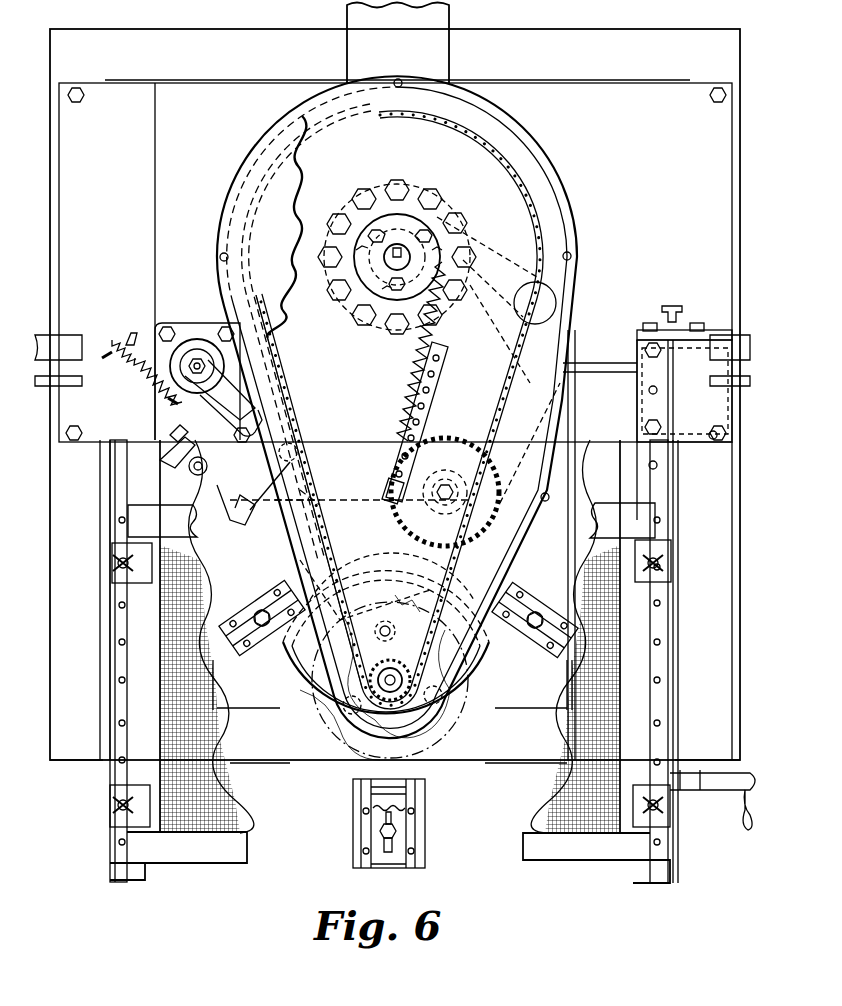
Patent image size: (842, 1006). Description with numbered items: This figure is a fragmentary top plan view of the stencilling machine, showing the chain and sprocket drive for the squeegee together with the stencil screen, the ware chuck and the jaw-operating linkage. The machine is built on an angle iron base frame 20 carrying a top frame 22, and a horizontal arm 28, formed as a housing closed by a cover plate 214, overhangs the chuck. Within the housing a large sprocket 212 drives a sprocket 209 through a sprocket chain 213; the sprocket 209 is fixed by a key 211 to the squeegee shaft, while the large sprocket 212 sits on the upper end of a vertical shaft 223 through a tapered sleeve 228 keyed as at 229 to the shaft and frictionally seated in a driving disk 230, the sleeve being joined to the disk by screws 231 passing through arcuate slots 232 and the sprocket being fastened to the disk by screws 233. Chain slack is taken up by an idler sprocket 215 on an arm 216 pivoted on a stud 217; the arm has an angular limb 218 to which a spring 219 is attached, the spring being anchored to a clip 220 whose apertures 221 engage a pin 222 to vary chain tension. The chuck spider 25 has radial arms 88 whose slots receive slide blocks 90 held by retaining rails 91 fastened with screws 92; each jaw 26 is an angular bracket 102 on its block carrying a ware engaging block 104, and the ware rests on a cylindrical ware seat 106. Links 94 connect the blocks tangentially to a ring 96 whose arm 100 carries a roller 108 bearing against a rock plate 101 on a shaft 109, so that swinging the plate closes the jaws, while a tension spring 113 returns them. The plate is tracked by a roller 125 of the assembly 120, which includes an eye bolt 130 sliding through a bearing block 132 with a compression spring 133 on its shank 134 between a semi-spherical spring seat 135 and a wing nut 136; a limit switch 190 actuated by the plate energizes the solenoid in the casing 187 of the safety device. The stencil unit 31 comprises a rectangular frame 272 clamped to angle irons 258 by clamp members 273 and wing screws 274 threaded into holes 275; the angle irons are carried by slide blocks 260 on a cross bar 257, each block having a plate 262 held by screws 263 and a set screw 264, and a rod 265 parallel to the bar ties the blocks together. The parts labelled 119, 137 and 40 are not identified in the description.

The base frame 20 is at (744, 62).
The top frame 22 is at (635, 35).
The casing 187 is at (449, 17).
The horizontal arm 28 is at (584, 262).
The large sprocket 212 is at (500, 148).
The cover plate 214 is at (232, 228).
The sprocket chain 213 is at (347, 122).
The vertical shaft 223 is at (405, 250).
The key 229 is at (388, 230).
The screws 231 is at (430, 240).
The arcuate slots 232 is at (395, 288).
The driving disk 230 is at (460, 208).
The tapered sleeve 228 is at (335, 280).
The screws 233 is at (352, 293).
The angular limb 218 is at (508, 258).
The stud 217 is at (556, 314).
The spring 219 is at (440, 344).
The clip 220 is at (400, 447).
The apertures 221 is at (410, 418).
The pin 222 is at (390, 490).
The arm 216 is at (502, 404).
The bracket 119 is at (200, 340).
The assembly 120 is at (229, 417).
The eye bolt 130 is at (190, 466).
The lever 137 is at (172, 448).
The bearing block 132 is at (168, 428).
The shank 134 is at (147, 390).
The spring seat 135 is at (165, 404).
The spring 133 is at (135, 372).
The wing nut 136 is at (128, 345).
The roller 125 is at (301, 450).
The limit switch 190 is at (240, 490).
The rock plate 101 is at (272, 505).
The stencil unit 31 is at (100, 850).
The holes 275 is at (118, 725).
The angle irons 258 is at (125, 503).
The clamp members 273 is at (118, 576).
The wing screws 274 is at (118, 560).
The rectangular frame 272 is at (137, 660).
The slide blocks 260 is at (700, 412).
The plate 262 is at (640, 335).
The screws 263 is at (697, 320).
The set screw 264 is at (672, 304).
The cross bar 257 is at (30, 335).
The rod 265 is at (42, 385).
The ware seat 106 is at (483, 712).
The key 211 is at (392, 694).
The sprocket 209 is at (393, 635).
The tension spring 113 is at (425, 600).
The arm 100 is at (342, 572).
The idler sprocket 215 is at (406, 583).
The ring 96 is at (440, 626).
The shaft 109 is at (315, 514).
The roller 108 is at (322, 539).
The arm 88 is at (262, 645).
The block 90 is at (232, 590).
The retaining rails 91 is at (272, 588).
The screws 92 is at (262, 568).
The jaws 26 is at (280, 648).
The angular bracket 102 is at (530, 572).
The link 94 is at (353, 775).
The ware engaging block 104 is at (415, 790).
The chuck assembly 25 is at (343, 838).
The outlet spout 40 is at (708, 790).